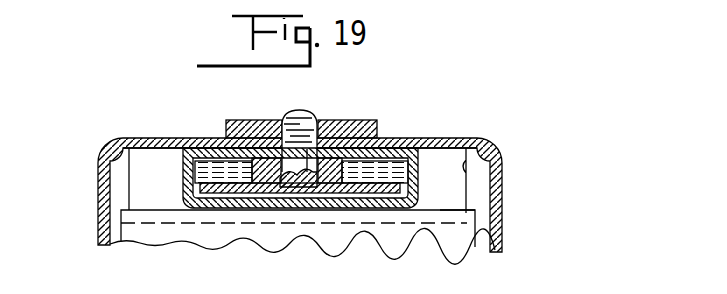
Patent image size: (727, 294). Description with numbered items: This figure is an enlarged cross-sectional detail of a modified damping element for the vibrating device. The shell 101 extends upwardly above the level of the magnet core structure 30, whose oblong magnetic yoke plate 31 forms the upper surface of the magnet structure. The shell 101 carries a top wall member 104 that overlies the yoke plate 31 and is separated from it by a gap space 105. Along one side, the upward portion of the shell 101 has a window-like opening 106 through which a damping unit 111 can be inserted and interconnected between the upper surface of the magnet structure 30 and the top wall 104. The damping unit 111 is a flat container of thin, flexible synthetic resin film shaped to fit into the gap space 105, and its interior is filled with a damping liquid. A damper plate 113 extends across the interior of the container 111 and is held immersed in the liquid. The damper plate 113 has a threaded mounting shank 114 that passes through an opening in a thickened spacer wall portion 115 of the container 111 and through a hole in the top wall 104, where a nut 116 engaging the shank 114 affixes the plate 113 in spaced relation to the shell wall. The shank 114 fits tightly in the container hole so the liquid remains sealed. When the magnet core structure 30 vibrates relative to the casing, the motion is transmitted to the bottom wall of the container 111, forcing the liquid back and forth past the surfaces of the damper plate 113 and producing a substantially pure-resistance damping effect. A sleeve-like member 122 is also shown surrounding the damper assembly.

The magnetic core structure 30 is at (163, 230).
The magnetic yoke plate 31 is at (453, 213).
The shell 101 is at (98, 195).
The top wall member 104 is at (148, 138).
The gap space 105 is at (147, 165).
The window-like opening 106 is at (470, 140).
The damping unit 111 is at (440, 153).
The damper plate 113 is at (367, 178).
The threaded mounting shank 114 is at (294, 128).
The thickened spacer wall portion 115 is at (340, 132).
The nut 116 is at (247, 120).
The bearing housing 122 is at (418, 173).